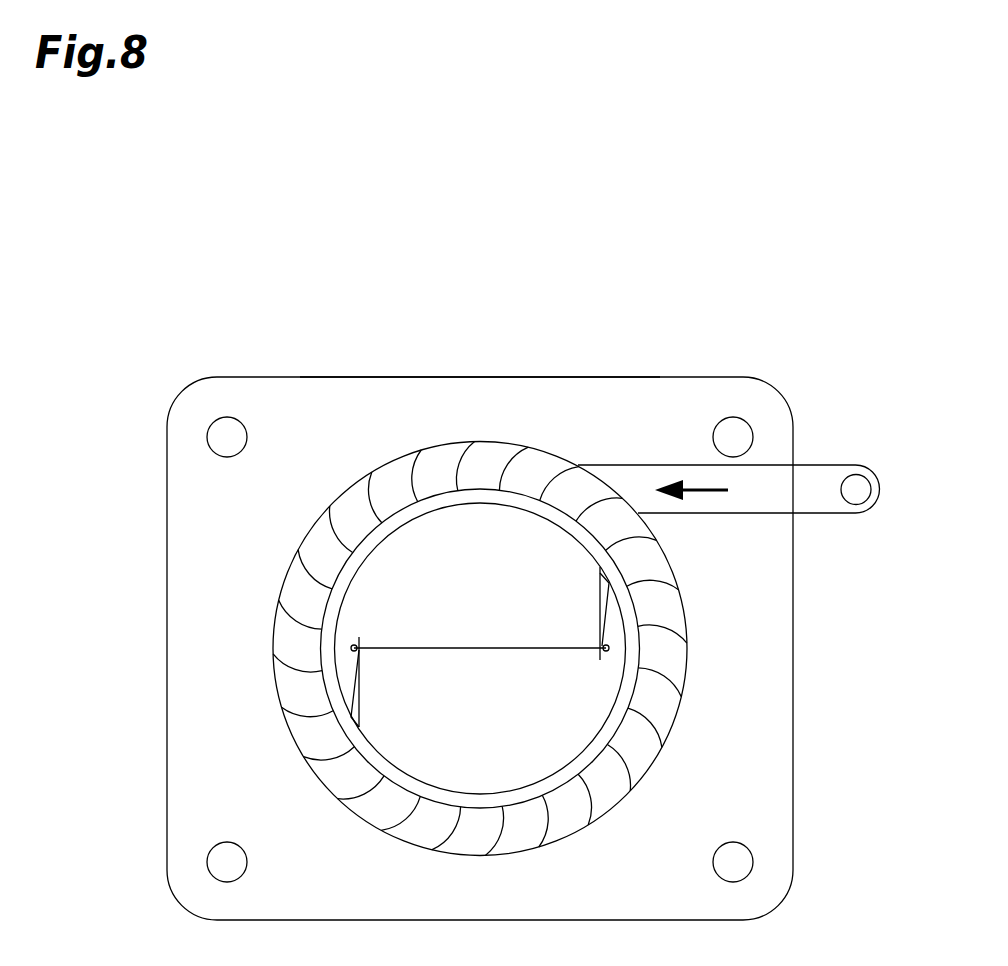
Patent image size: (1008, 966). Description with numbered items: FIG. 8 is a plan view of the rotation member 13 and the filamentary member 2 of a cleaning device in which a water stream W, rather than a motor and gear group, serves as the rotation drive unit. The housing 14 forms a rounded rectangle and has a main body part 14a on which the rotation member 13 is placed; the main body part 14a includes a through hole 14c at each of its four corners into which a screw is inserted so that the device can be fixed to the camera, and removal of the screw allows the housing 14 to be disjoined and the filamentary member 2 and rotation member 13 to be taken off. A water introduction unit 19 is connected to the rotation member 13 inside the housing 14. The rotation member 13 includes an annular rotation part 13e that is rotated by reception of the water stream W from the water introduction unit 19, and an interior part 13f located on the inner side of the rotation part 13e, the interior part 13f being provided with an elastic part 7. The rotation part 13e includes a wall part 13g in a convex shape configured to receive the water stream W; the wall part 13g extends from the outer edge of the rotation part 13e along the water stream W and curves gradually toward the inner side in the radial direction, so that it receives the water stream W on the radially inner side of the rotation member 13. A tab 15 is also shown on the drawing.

The housing 14 is at (677, 370).
The main body part 14a is at (557, 390).
The through hole 14c is at (227, 418).
The rotation member 13 is at (480, 592).
The rotation part 13e is at (453, 455).
The interior part 13f is at (398, 505).
The wall part 13g is at (565, 482).
The tab 15 is at (736, 536).
The water introduction unit 19 is at (770, 498).
The water stream W is at (698, 486).
The filamentary member 2 is at (476, 645).
The elastic part 7 is at (598, 618).